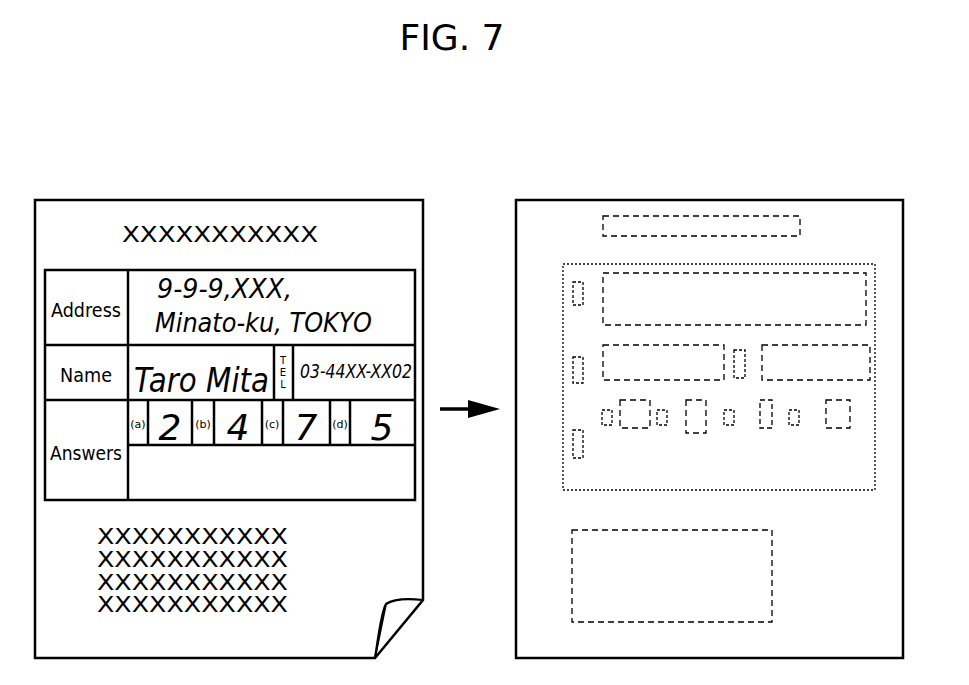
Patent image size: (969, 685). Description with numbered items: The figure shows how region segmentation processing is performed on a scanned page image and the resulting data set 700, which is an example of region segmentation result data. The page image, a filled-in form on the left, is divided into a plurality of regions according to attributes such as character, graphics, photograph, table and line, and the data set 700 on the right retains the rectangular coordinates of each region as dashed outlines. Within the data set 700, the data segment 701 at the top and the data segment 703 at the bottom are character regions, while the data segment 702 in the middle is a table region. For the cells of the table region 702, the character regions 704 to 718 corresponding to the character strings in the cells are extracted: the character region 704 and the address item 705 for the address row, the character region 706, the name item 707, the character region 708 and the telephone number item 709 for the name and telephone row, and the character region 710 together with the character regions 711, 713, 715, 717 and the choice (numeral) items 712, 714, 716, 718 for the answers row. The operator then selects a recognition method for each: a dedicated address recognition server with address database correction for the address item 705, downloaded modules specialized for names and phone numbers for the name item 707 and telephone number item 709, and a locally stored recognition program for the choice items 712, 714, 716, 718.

The data set 700 is at (680, 200).
The character region 701 is at (603, 229).
The table region 702 is at (563, 278).
The character region 703 is at (572, 578).
The character region 704 is at (583, 306).
The address item 705 is at (818, 273).
The character region 706 is at (583, 383).
The name item 707 is at (637, 345).
The character region 708 is at (735, 350).
The telephone number item 709 is at (803, 345).
The character region 710 is at (583, 458).
The character region 711 is at (611, 425).
The choice (numeral) item 712 is at (636, 428).
The character region 713 is at (667, 425).
The choice (numeral) item 714 is at (695, 433).
The character region 715 is at (734, 425).
The choice (numeral) item 716 is at (770, 428).
The character region 717 is at (800, 425).
The choice (numeral) item 718 is at (835, 428).